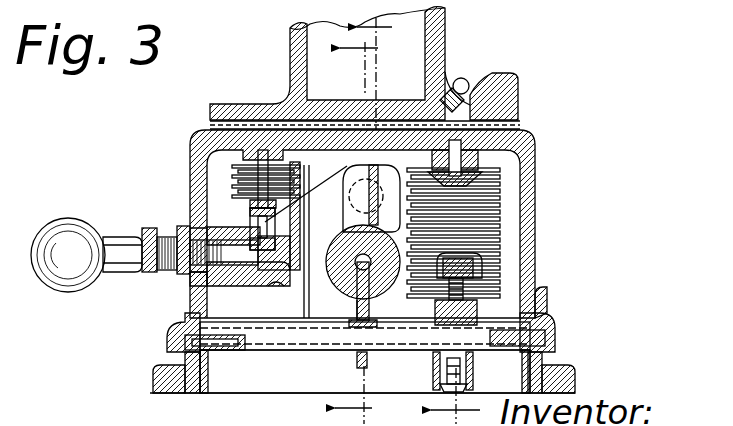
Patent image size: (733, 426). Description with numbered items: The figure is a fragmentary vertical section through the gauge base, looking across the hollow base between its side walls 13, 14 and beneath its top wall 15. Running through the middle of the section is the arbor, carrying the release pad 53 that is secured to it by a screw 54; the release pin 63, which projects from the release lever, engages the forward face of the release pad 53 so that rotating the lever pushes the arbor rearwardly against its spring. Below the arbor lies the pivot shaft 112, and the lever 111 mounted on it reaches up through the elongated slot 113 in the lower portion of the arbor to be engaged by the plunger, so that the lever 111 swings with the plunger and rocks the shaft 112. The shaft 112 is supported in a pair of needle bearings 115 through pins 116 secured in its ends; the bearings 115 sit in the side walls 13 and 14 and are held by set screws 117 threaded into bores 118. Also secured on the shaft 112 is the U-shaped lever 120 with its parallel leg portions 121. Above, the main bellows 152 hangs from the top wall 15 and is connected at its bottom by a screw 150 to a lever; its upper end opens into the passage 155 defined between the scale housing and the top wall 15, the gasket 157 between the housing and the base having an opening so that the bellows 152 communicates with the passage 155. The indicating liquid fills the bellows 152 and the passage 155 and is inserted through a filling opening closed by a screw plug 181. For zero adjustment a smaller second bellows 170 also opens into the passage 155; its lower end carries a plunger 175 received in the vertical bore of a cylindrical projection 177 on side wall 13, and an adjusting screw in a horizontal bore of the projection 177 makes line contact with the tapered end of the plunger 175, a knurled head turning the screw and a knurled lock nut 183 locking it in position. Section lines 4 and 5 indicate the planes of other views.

The section line 4- 4 is at (418, 220).
The section line 5- 5 is at (364, 231).
The side wall 13 is at (206, 164).
The side wall 14 is at (527, 216).
The top wall 15 is at (297, 127).
The release pad 53 is at (347, 168).
The screw 54 is at (327, 268).
The pin 63 is at (276, 289).
The lever 111 is at (369, 314).
The pivot shaft 112 is at (323, 349).
The elongated slot 113 is at (357, 304).
The bearings 115 is at (190, 329).
The pins 116 is at (508, 316).
The set screws 117 is at (183, 359).
The bores 118 is at (193, 393).
The lever 120 is at (430, 369).
The leg portions 121 is at (434, 383).
The screw 150 is at (466, 285).
The bellows 152 is at (503, 200).
The passage 155 is at (393, 126).
The gasket 157 is at (340, 129).
The second bellows 170 is at (258, 168).
The plunger 175 is at (257, 212).
The cylindrical projection 177 is at (194, 292).
The screw plug 181 is at (463, 90).
The knurled lock nut 183 is at (173, 243).